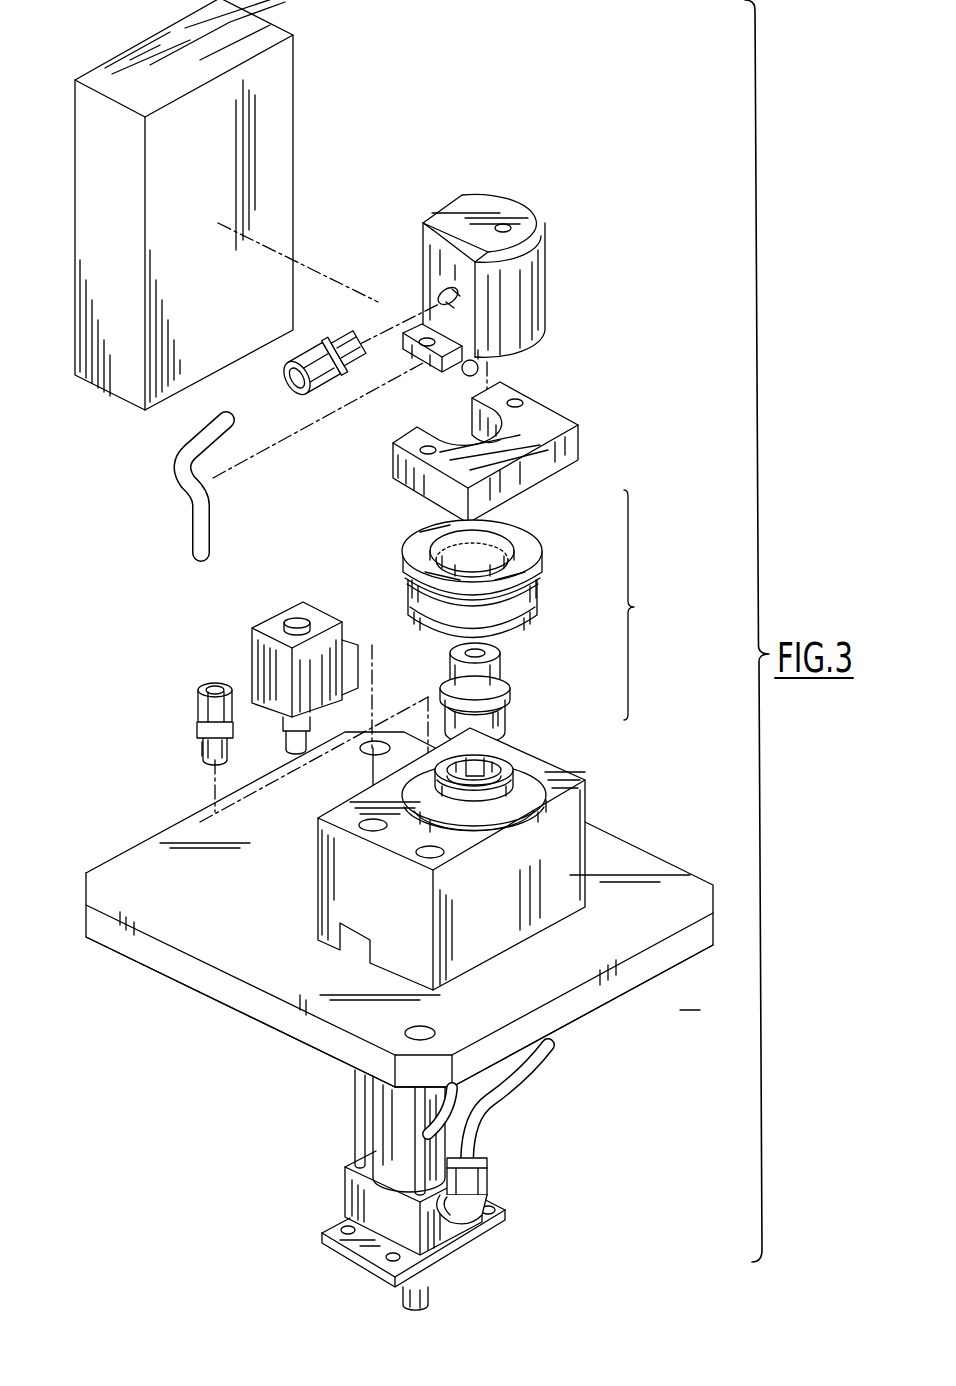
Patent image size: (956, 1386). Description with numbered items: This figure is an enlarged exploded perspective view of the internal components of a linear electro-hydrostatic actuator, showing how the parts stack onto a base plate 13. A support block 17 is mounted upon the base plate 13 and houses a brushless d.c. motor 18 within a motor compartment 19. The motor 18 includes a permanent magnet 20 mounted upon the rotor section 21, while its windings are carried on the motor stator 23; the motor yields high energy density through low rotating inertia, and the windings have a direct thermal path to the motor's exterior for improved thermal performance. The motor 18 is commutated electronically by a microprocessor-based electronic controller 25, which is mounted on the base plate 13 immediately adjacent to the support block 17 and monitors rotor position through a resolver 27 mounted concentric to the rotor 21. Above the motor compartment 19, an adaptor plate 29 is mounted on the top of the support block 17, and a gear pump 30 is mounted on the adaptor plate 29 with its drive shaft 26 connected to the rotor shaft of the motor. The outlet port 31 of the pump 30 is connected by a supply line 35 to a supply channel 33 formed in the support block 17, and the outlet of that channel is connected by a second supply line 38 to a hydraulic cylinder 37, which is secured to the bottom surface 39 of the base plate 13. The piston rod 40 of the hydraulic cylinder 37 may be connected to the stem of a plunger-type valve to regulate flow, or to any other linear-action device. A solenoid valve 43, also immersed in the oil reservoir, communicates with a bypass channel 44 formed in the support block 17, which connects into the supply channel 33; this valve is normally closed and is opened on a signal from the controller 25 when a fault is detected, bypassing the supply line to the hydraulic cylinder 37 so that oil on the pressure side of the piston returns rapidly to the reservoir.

The base plate 13 is at (627, 989).
The support block 17 is at (469, 859).
The brushless d.c. motor 18 is at (502, 631).
The motor compartment 19 is at (473, 826).
The permanent magnet 20 is at (508, 712).
The rotor section 21 is at (405, 590).
The motor stator 23 is at (526, 543).
The electronic controller 25 is at (306, 110).
The drive shaft 26 is at (466, 374).
The resolver 27 is at (526, 792).
The adaptor plate 29 is at (589, 445).
The gear pump 30 is at (500, 283).
The outlet port 31 is at (444, 290).
The supply channel 33 is at (421, 860).
The supply line 35 is at (191, 520).
The hydraulic cylinder 37 is at (328, 1172).
The second supply line 38 is at (470, 1137).
The bottom surface 39 is at (211, 997).
The piston rod 40 is at (431, 1284).
The solenoid valve 43 is at (251, 650).
The bypass channel 44 is at (356, 826).